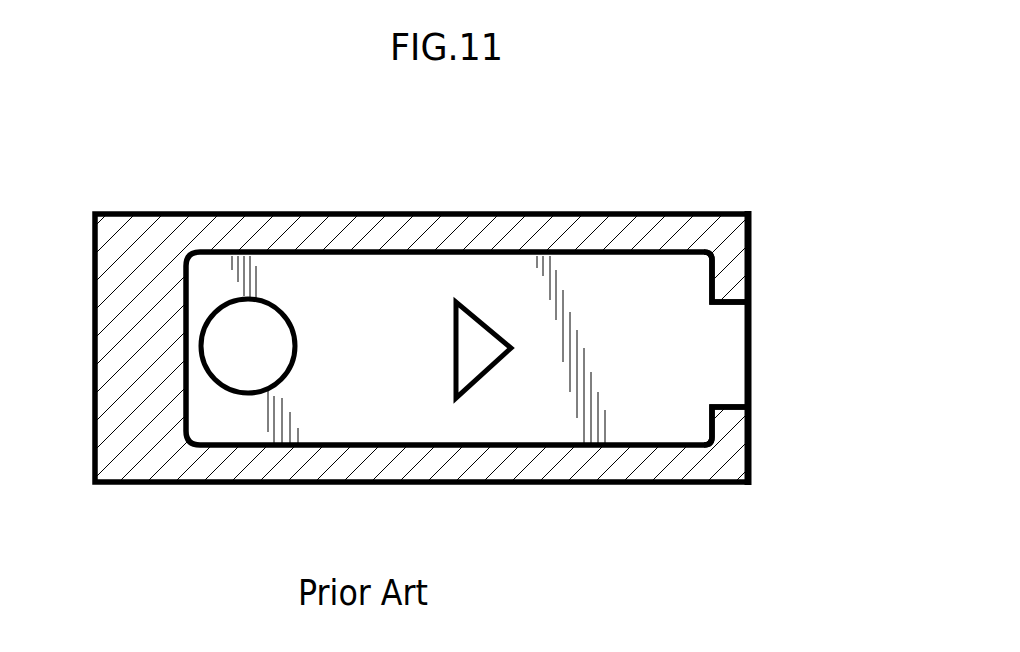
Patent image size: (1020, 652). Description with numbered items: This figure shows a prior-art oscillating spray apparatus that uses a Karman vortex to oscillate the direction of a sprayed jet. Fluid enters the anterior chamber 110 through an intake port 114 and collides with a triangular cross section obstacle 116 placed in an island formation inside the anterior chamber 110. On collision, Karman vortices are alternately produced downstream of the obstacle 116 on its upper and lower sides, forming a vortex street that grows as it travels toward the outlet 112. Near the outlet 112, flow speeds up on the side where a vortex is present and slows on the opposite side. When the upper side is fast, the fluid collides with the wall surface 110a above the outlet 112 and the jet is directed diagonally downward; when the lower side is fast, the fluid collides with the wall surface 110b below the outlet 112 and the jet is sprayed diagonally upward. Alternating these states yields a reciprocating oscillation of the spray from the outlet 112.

The anterior chamber 110 is at (573, 278).
The wall surface on the upper side of the outlet 110a is at (708, 280).
The wall surface on the lower side of the outlet 110b is at (710, 422).
The outlet 112 is at (732, 306).
The intake port 114 is at (237, 305).
The triangular cross section obstacle 116 is at (471, 328).